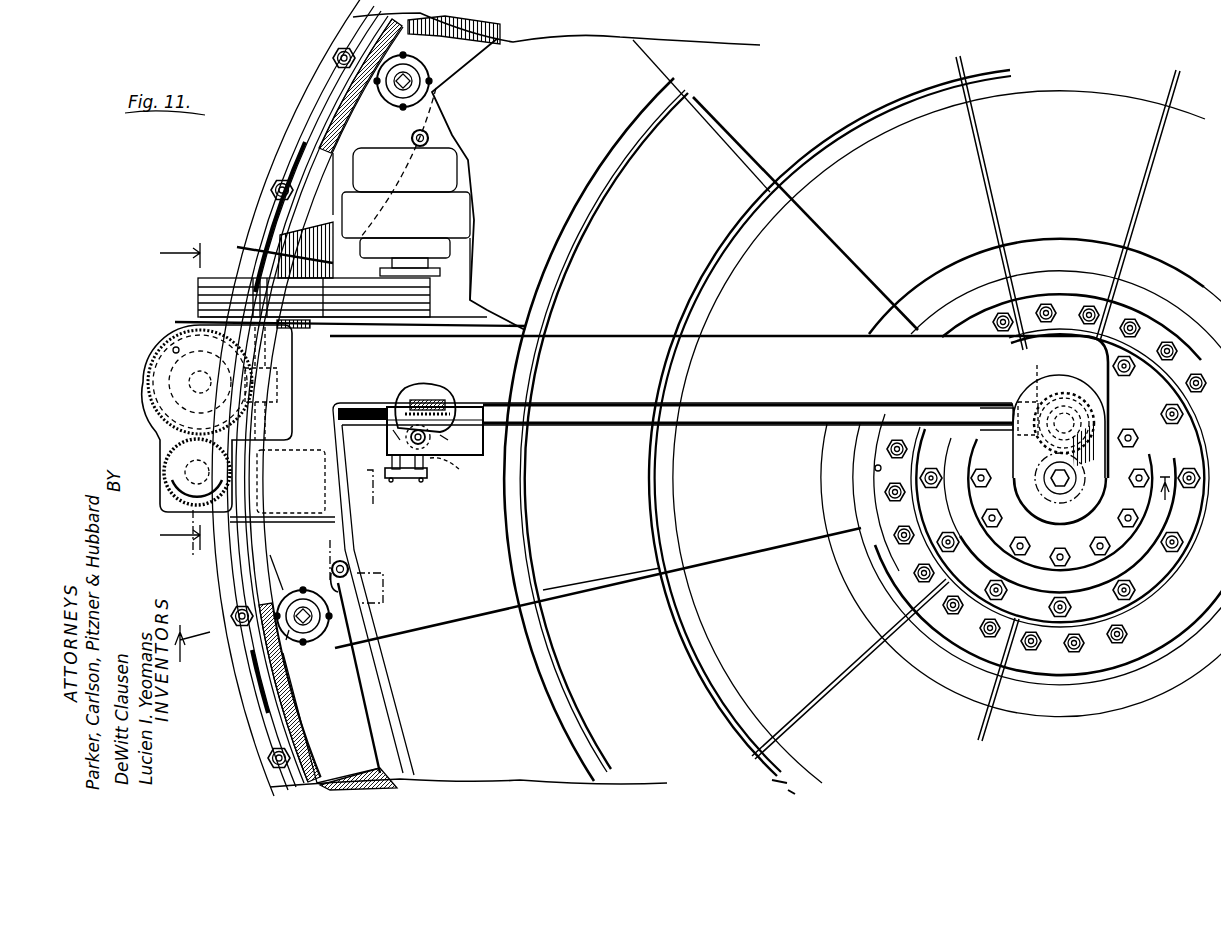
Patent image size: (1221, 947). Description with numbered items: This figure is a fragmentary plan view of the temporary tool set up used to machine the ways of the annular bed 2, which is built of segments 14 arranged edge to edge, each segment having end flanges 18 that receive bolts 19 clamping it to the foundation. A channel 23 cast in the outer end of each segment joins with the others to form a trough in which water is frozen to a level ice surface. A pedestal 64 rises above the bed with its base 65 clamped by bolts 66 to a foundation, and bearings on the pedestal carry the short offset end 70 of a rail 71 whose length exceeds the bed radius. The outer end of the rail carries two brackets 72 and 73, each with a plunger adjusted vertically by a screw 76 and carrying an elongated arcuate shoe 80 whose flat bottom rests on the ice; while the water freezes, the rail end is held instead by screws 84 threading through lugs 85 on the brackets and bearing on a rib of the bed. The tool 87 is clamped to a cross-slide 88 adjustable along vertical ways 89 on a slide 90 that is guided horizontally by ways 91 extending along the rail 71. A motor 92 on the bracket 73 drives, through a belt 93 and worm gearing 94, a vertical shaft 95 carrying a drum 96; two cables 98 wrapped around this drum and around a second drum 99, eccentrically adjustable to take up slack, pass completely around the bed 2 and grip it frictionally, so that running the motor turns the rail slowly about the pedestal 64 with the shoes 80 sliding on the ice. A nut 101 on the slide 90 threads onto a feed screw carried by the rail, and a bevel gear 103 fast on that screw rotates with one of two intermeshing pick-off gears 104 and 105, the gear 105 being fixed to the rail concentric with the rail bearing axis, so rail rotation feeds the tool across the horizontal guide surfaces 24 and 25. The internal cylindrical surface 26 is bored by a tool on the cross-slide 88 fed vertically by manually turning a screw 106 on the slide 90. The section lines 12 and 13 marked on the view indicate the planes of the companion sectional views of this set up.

The bed 2 is at (576, 20).
The section line 12 is at (670, 570).
The section line 13 is at (180, 395).
The bed segment 14 is at (755, 132).
The flange 18 is at (287, 150).
The bolt 19 is at (333, 56).
The channel 23 is at (380, 772).
The annular horizontal guide surface 24 is at (600, 185).
The annular horizontal guide surface 25 is at (750, 262).
The internal cylindrical surface 26 is at (875, 468).
The pedestal 64 is at (980, 445).
The base 65 is at (1143, 578).
The bolt 66 is at (1052, 598).
The offset end 70 is at (1094, 492).
The rail 71 is at (780, 346).
The bracket 72 is at (276, 576).
The bracket 73 is at (458, 280).
The screw 76 is at (398, 92).
The arcuate shoe 80 is at (452, 58).
The screw 84 is at (430, 140).
The lug 85 is at (385, 578).
The tool 87 is at (430, 462).
The cross-slide 88 is at (388, 447).
The vertical ways 89 is at (395, 425).
The slide 90 is at (440, 438).
The ways 91 is at (580, 427).
The motor 92 is at (465, 215).
The belt 93 is at (422, 298).
The worm gearing 94 is at (270, 370).
The vertical shaft 95 is at (195, 381).
The drum 96 is at (178, 352).
The cable 98 is at (272, 213).
The second drum 99 is at (168, 462).
The nut 101 is at (435, 390).
The bevel gear 103 is at (1038, 380).
The pick-off gear 104 is at (1048, 470).
The pick-off gear 105 is at (1055, 474).
The screw 106 is at (480, 470).